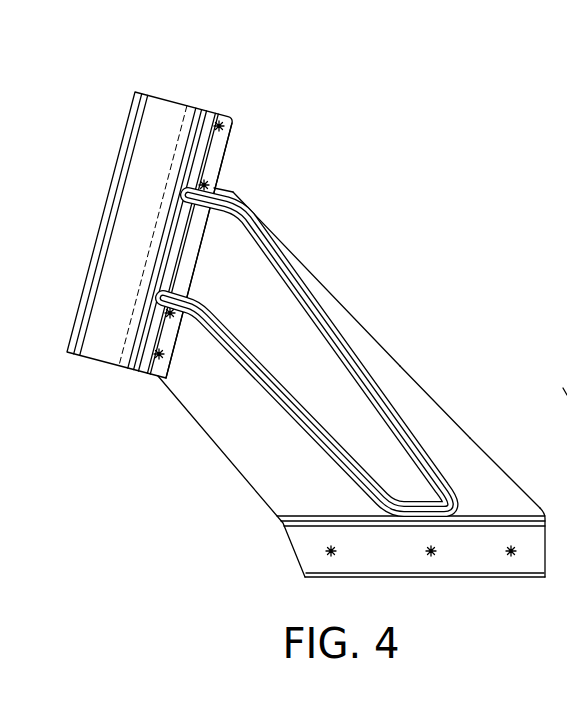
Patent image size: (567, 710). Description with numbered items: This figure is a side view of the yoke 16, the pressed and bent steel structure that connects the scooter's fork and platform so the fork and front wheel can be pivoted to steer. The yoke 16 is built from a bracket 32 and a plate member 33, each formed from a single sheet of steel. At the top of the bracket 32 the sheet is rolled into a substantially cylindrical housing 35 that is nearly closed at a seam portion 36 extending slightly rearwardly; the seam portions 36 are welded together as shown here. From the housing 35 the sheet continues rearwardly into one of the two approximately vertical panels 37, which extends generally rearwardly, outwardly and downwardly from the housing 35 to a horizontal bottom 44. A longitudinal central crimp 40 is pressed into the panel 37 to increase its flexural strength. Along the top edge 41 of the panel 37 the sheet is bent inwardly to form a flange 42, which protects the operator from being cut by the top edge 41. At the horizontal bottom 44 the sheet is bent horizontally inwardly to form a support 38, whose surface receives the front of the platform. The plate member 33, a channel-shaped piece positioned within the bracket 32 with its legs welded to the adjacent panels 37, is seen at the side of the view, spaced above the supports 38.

The yoke 16 is at (298, 245).
The bracket 32 is at (226, 157).
The plate member 33 is at (566, 392).
The cylindrical housing 35 is at (158, 96).
The seam portion 36 is at (215, 112).
The panel 37 is at (378, 340).
The support 38 is at (483, 578).
The longitudinal central crimp 40 is at (303, 303).
The top edge 41 is at (435, 400).
The flange 42 is at (498, 466).
The horizontal bottom 44 is at (402, 578).